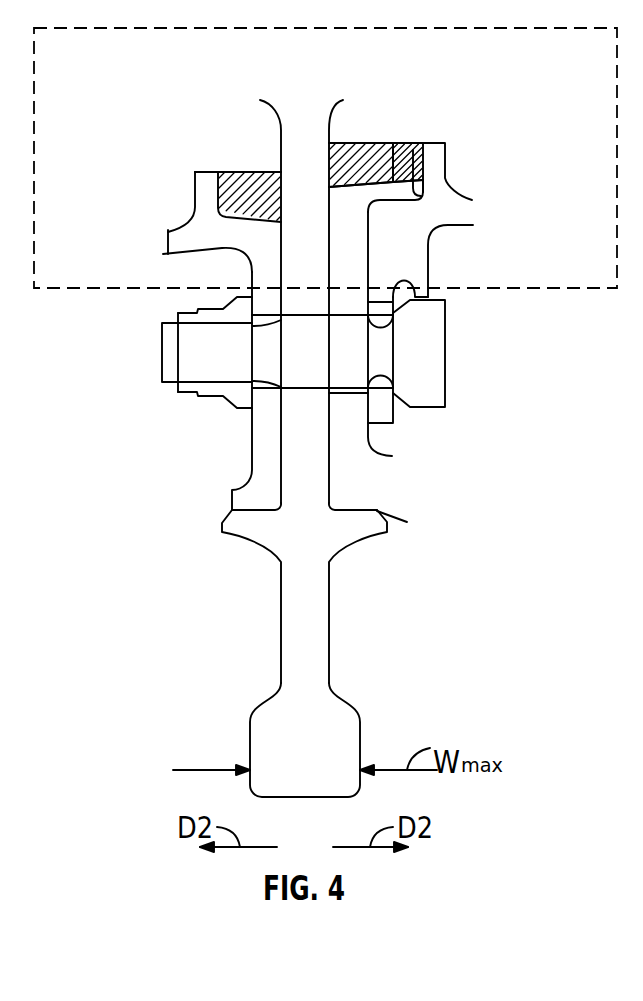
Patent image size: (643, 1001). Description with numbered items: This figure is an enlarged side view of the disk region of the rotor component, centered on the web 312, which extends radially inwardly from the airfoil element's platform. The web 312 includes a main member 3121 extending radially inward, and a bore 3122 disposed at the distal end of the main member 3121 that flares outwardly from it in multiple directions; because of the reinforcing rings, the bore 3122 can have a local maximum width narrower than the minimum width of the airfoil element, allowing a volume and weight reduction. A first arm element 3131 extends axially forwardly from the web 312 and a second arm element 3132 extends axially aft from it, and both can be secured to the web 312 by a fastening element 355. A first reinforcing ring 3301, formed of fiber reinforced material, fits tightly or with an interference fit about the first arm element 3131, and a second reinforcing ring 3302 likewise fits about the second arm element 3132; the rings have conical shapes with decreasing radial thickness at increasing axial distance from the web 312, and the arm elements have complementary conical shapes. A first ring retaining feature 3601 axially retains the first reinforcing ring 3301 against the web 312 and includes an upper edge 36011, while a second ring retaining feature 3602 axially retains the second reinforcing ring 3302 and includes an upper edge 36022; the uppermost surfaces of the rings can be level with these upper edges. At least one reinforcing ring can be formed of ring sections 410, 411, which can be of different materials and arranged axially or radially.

The web 312 is at (277, 693).
The main member 3121 is at (297, 467).
The bore 3122 is at (280, 753).
The fastening element 355 is at (408, 342).
The first ring retaining feature 3601 is at (212, 182).
The upper edge 36011 is at (203, 168).
The first reinforcing ring 3301 is at (230, 177).
The first arm element 3131 is at (187, 245).
The second ring retaining feature 3602 is at (437, 182).
The upper edge 36022 is at (425, 153).
The second reinforcing ring 3302 is at (392, 153).
The ring section 410 is at (380, 152).
The ring section 411 is at (437, 152).
The second arm element 3132 is at (453, 207).